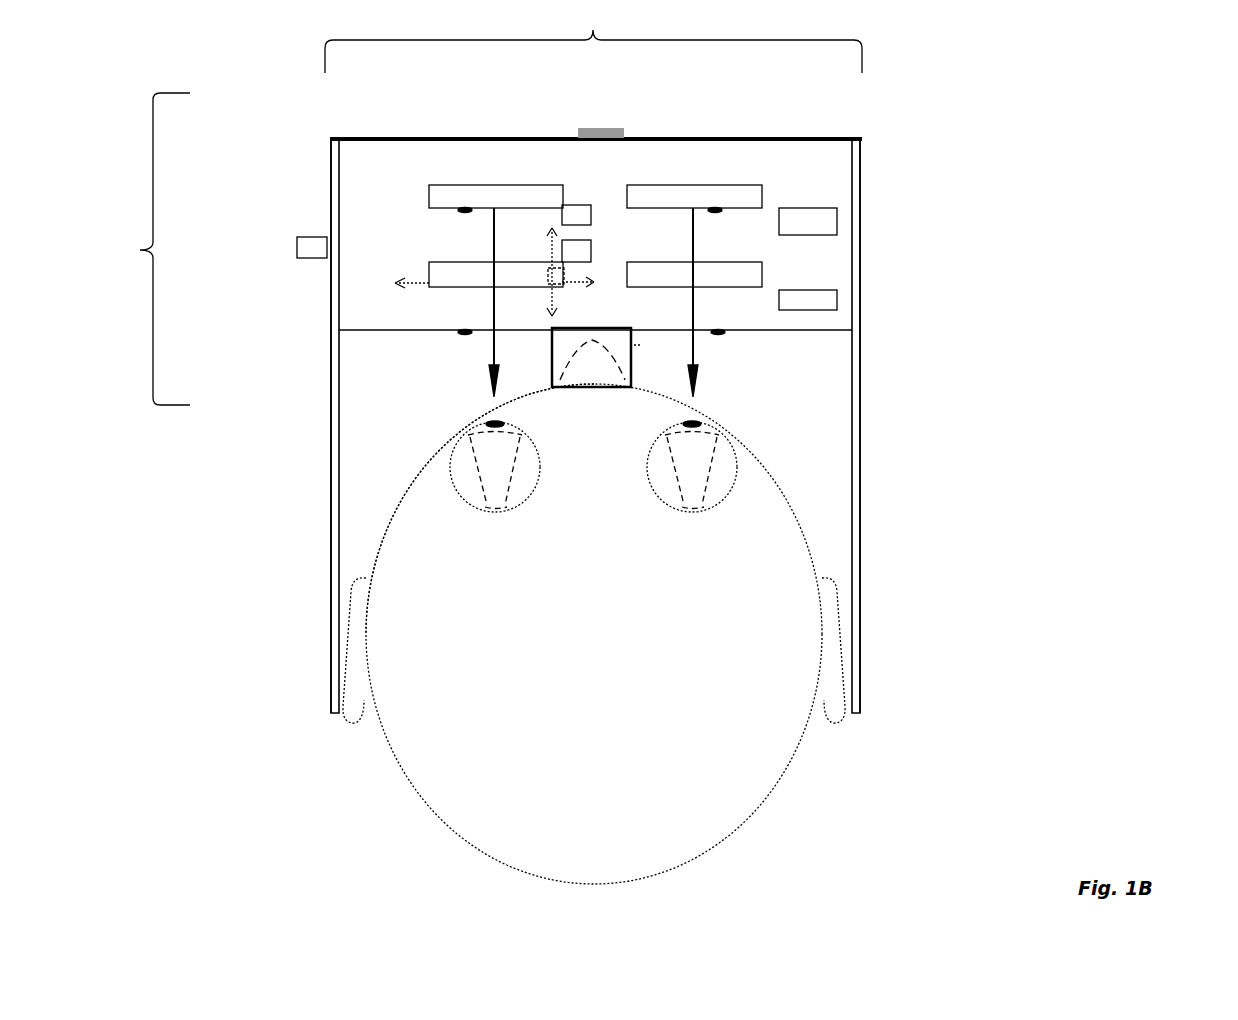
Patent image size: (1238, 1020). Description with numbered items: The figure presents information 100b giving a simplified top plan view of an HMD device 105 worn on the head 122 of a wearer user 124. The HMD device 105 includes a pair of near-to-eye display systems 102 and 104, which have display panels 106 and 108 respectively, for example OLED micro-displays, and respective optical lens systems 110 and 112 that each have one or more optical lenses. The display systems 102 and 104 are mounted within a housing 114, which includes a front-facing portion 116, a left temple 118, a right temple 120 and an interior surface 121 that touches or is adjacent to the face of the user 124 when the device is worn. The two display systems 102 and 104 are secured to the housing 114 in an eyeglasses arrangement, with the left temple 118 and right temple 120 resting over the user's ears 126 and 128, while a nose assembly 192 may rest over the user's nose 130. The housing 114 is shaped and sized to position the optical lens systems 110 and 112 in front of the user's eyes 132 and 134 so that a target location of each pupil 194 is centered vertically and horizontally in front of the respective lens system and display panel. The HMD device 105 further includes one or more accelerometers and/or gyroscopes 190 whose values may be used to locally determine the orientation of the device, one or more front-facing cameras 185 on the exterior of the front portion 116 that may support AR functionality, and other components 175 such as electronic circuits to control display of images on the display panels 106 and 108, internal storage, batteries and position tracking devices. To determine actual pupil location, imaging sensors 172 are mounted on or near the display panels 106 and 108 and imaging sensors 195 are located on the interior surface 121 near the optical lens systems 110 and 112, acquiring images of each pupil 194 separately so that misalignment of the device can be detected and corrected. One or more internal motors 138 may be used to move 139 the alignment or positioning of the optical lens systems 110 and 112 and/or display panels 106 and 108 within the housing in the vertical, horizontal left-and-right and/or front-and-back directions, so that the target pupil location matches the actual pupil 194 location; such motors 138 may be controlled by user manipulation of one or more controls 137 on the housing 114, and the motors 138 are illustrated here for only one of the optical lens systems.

The information 100b is at (967, 113).
The near-to-eye display system 102 is at (436, 168).
The near-to-eye display system 104 is at (740, 168).
The HMD device 105 is at (476, 204).
The display panel 106 is at (530, 185).
The display panel 108 is at (690, 185).
The optical lens system 110 is at (398, 280).
The optical lens system 112 is at (762, 276).
The housing 114 is at (333, 137).
The front-facing portion 116 is at (485, 140).
The left temple 118 is at (333, 560).
The right temple 120 is at (858, 560).
The interior surface 121 is at (360, 333).
The head 122 is at (678, 875).
The wearer user 124 is at (812, 818).
The ear 126 is at (349, 722).
The ear 128 is at (838, 722).
The nose 130 is at (640, 345).
The eye 132 is at (452, 480).
The eye 134 is at (735, 480).
The control 137 is at (297, 247).
The internal motor 138 is at (591, 223).
The movement 139 is at (555, 277).
The imaging sensor 172 is at (462, 212).
The other components 175 is at (838, 222).
The camera 185 is at (620, 134).
The accelerometer and/or gyroscope 190 is at (838, 302).
The nose assembly 192 is at (552, 365).
The pupil 194 is at (688, 425).
The imaging sensor 195 is at (462, 334).